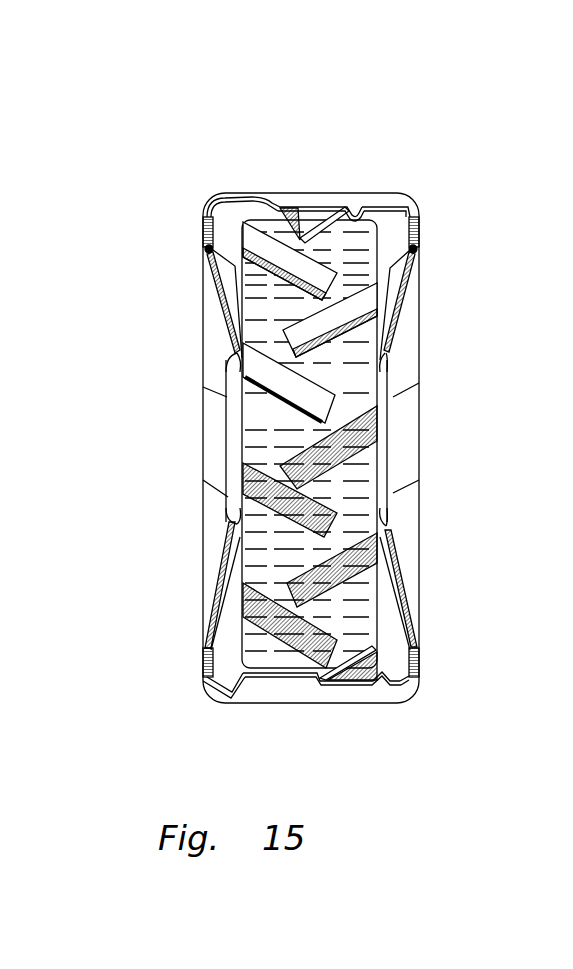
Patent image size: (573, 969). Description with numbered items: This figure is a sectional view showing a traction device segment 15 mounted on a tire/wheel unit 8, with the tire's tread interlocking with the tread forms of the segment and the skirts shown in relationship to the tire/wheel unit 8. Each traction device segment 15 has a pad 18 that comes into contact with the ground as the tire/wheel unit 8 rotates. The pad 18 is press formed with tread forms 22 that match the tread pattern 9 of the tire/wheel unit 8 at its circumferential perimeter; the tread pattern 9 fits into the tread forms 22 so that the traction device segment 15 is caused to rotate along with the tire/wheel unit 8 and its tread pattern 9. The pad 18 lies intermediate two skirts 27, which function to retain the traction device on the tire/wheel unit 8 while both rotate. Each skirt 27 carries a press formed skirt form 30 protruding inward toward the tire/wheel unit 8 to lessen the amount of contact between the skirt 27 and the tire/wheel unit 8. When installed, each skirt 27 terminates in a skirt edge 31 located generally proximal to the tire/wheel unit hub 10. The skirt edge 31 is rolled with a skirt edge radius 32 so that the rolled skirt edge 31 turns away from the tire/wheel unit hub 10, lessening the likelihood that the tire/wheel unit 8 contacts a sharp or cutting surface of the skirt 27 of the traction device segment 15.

The tire/wheel unit 8 is at (268, 413).
The tread pattern 9 is at (305, 215).
The tire/wheel unit hub 10 is at (572, 446).
The traction device segment 15 is at (367, 122).
The pad 18 is at (300, 193).
The tread form 22 is at (250, 193).
The skirt 27 is at (398, 305).
The skirt form 30 is at (398, 270).
The skirt edge 31 is at (238, 389).
The skirt edge radius 32 is at (237, 366).